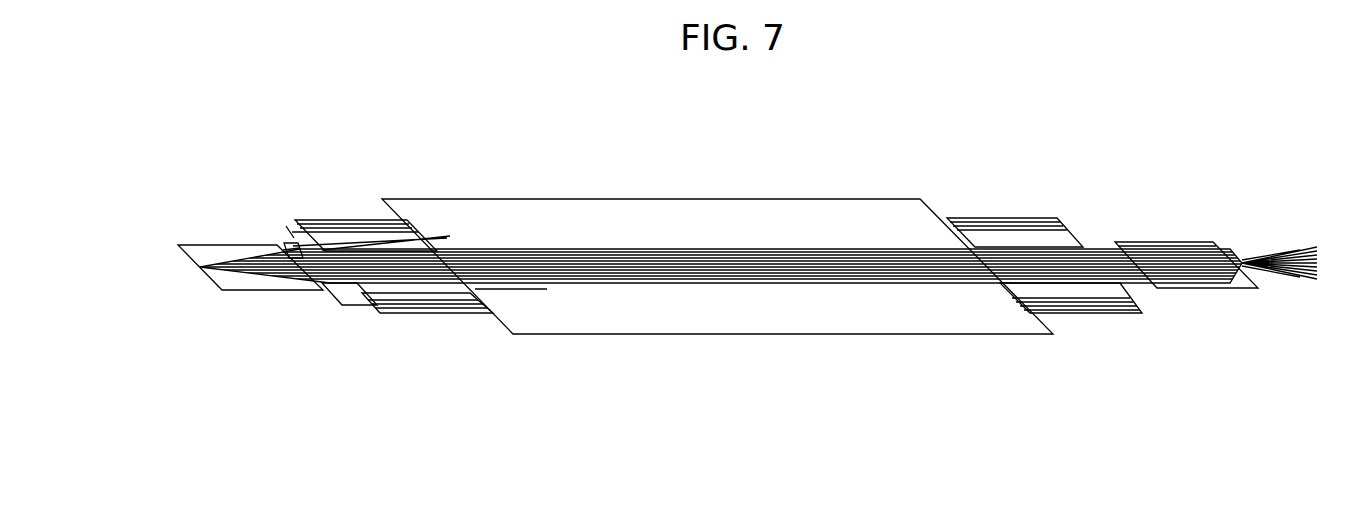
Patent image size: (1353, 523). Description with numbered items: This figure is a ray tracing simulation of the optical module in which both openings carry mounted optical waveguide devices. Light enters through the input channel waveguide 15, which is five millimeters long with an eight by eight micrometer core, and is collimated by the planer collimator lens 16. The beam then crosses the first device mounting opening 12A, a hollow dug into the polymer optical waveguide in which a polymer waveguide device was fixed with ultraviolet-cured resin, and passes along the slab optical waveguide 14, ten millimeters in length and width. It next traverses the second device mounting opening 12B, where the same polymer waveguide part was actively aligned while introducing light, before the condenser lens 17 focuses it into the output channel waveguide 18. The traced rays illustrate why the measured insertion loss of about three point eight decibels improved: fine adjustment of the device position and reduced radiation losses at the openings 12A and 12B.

The first device mounting opening 12A is at (332, 240).
The second device mounting opening 12B is at (1017, 250).
The slab optical waveguide 14 is at (702, 220).
The input channel waveguide 15 is at (222, 255).
The planer collimator lens 16 is at (292, 236).
The condenser lens 17 is at (1082, 247).
The output channel waveguide 18 is at (1188, 247).